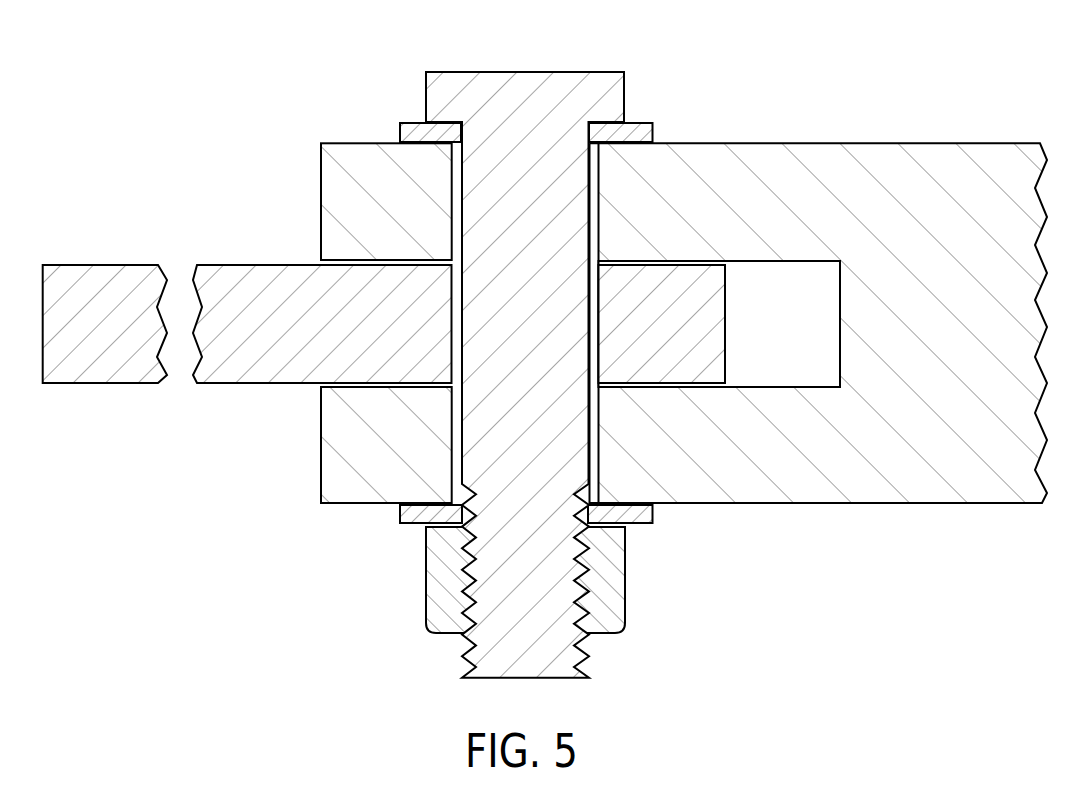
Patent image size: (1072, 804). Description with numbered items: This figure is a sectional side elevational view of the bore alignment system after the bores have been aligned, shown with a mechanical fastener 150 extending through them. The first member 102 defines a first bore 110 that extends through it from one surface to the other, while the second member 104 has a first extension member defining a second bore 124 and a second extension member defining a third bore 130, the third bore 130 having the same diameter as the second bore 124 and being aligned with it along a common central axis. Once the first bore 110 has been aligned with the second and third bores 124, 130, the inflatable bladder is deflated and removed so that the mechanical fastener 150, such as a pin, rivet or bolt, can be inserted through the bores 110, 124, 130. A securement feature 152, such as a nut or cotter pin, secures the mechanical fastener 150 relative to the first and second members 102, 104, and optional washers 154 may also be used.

The first member 102 is at (90, 265).
The second member 104 is at (832, 142).
The first bore 110 is at (455, 342).
The second bore 124 is at (453, 207).
The third bore 130 is at (453, 490).
The mechanical fastener 150 is at (543, 72).
The securement feature 152 is at (625, 590).
The washers 154 is at (653, 128).